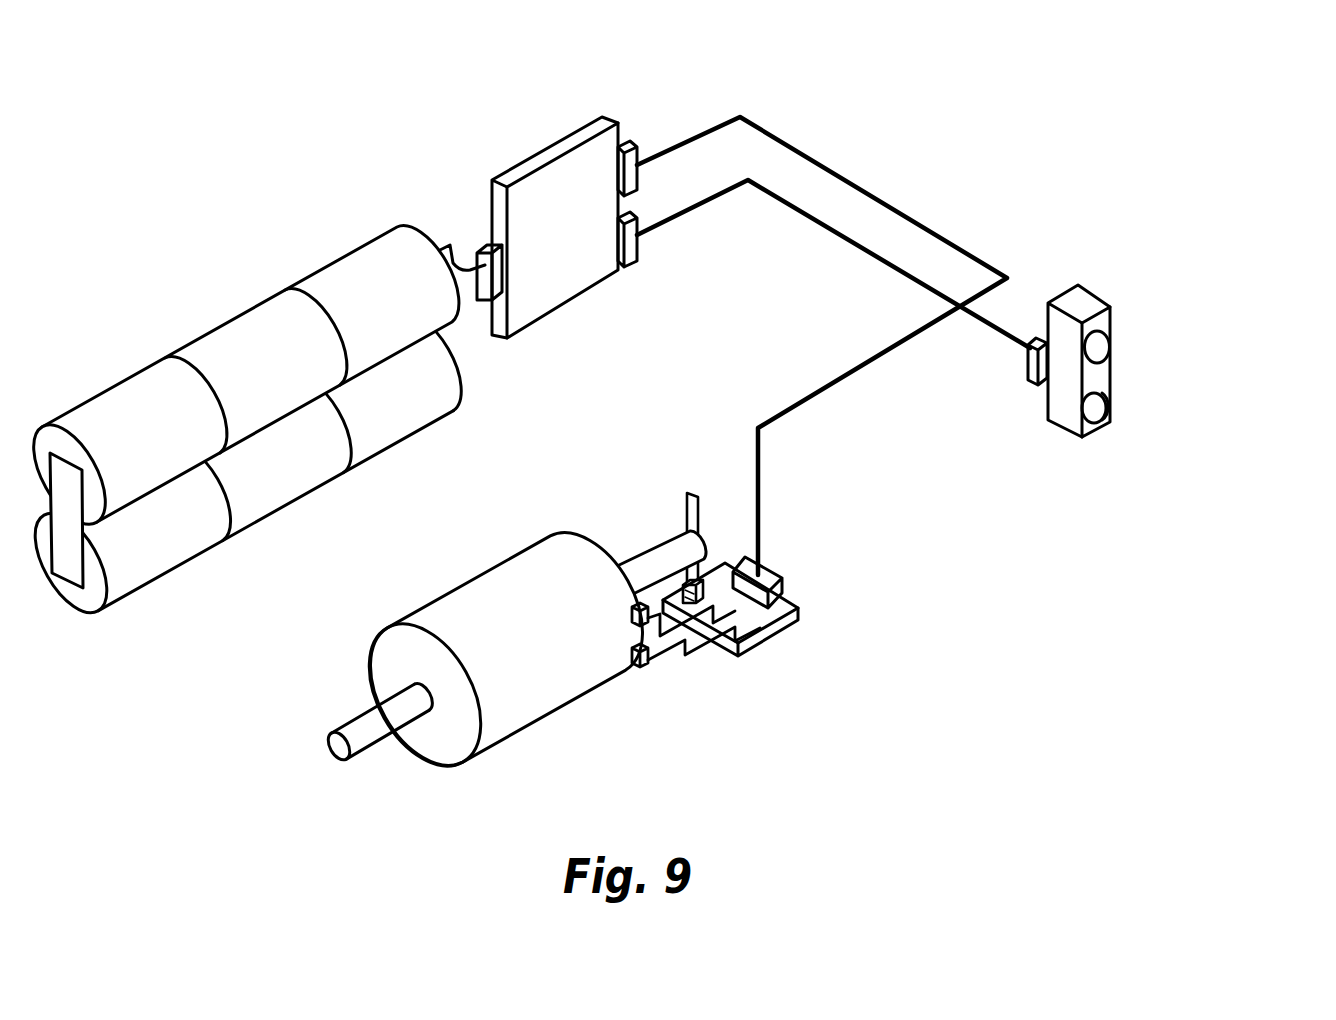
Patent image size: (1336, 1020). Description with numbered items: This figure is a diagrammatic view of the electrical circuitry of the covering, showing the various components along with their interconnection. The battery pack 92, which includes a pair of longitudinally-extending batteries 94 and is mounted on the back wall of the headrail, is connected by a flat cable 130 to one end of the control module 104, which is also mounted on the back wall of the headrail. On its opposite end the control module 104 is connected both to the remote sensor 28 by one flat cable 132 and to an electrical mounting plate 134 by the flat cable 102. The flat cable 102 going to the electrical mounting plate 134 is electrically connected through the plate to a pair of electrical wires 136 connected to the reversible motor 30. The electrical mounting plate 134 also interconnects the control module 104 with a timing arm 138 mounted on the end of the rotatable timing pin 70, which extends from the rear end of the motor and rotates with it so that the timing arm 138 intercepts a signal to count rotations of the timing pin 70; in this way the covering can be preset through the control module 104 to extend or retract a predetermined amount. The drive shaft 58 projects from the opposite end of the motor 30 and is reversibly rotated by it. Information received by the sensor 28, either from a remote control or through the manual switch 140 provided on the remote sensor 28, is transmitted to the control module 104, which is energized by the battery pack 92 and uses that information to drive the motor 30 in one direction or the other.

The battery pack 92 is at (240, 380).
The batteries 94 is at (135, 400).
The flat cable 130 is at (450, 246).
The control module 104 is at (548, 173).
The flat wire conductor 102 is at (687, 137).
The flat cable 132 is at (782, 205).
The remote sensor 28 is at (1176, 335).
The manual switch 140 is at (1108, 413).
The reversible motor 30 is at (505, 603).
The timing pin 70 is at (628, 573).
The timing arm 138 is at (692, 508).
The electrical mounting plate 134 is at (758, 618).
The electrical wires 136 is at (665, 653).
The drive shaft 58 is at (377, 737).